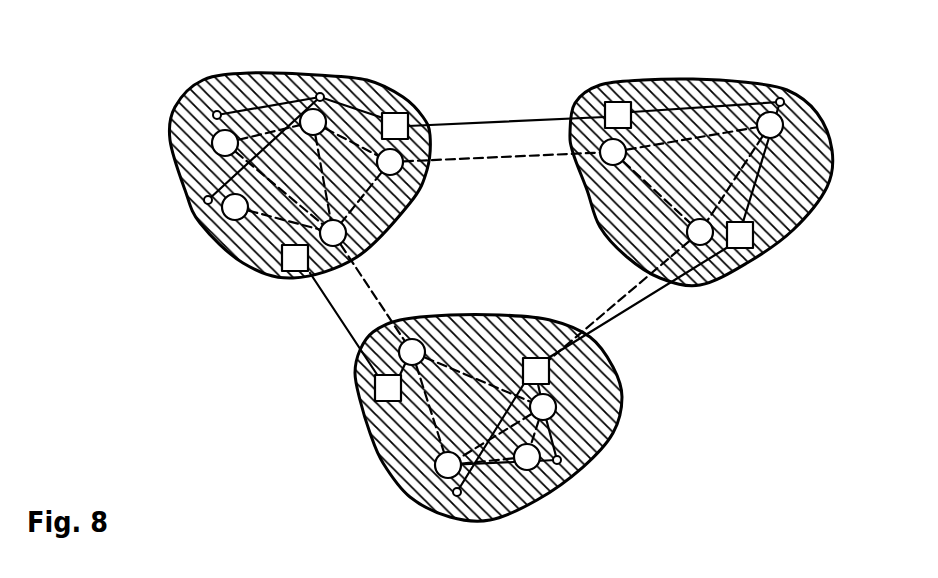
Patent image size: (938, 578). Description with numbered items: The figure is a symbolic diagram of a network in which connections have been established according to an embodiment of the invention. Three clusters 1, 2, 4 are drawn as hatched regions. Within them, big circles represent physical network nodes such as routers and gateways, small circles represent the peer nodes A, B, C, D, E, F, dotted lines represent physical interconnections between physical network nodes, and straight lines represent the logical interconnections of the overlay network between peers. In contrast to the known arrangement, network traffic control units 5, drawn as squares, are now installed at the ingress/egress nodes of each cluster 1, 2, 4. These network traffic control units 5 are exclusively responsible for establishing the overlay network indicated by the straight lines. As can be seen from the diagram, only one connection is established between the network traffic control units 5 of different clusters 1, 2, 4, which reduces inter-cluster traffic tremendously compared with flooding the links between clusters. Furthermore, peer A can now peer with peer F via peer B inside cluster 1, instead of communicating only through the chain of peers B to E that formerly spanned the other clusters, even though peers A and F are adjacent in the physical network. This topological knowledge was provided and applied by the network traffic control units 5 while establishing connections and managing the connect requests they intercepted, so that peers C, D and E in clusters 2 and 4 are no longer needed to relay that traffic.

The cluster 1 is at (212, 80).
The cluster 2 is at (742, 80).
The cluster 4 is at (623, 397).
The network traffic control unit 5 is at (398, 112).
The peer node A is at (218, 110).
The peer node B is at (321, 92).
The peer node C is at (784, 99).
The peer node D is at (560, 463).
The peer node E is at (454, 495).
The peer node F is at (204, 202).